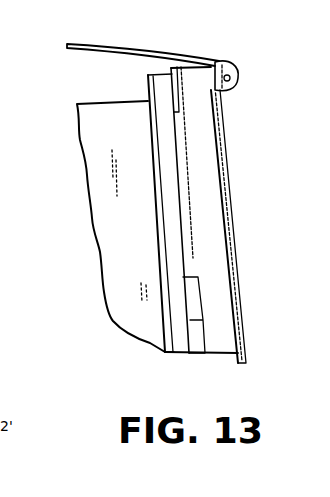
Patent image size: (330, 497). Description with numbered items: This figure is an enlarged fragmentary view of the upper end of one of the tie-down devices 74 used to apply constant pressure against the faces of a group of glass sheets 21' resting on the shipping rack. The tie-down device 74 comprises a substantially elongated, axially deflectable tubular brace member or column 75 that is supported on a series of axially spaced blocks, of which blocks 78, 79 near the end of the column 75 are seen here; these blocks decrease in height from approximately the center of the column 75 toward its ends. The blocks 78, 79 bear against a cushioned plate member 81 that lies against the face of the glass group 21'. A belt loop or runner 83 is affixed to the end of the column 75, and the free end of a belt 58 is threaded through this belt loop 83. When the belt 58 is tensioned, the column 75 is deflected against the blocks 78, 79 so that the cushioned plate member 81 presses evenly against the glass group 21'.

The group of glass sheets 21' is at (99, 226).
The belt 58 is at (112, 50).
The tie-down device 74 is at (241, 248).
The tubular brace member 75 is at (219, 204).
The block 78 is at (196, 318).
The block 79 is at (172, 111).
The cushioned plate member 81 is at (157, 97).
The belt loop 83 is at (229, 65).